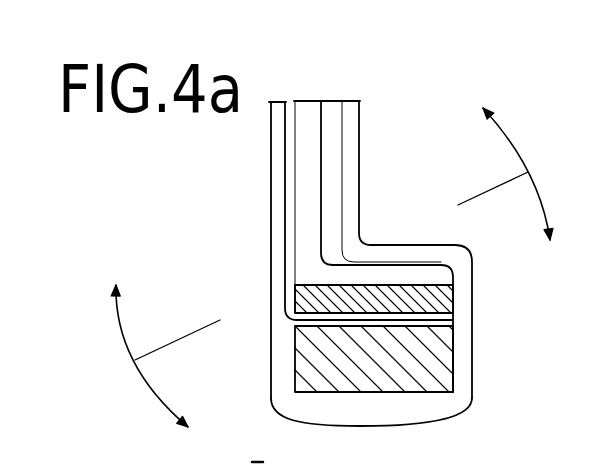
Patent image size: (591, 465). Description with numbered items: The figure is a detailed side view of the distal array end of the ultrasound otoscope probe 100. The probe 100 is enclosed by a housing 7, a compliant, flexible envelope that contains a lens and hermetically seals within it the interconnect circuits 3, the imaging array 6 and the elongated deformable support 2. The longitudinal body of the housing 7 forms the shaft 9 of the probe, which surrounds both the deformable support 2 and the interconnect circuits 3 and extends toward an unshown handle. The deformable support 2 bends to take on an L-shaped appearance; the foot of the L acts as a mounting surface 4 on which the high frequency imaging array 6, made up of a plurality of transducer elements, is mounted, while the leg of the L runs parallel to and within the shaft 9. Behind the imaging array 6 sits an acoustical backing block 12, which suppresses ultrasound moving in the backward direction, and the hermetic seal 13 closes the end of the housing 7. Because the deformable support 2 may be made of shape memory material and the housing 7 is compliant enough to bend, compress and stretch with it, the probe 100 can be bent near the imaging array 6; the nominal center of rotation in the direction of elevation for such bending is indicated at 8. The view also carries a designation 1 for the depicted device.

The clamping device 1 is at (476, 414).
The deformable support 2 is at (307, 164).
The interconnect circuits 3 is at (285, 191).
The mounting surface 4 is at (402, 278).
The imaging array 6 is at (423, 368).
The housing 7 is at (285, 373).
The nominal center of rotation in the direction of elevation 8 is at (313, 270).
The shaft 9 is at (250, 145).
The acoustical backing block 12 is at (405, 298).
The hermetic seal 13 is at (375, 412).
The ultrasound otoscope probe 100 is at (180, 180).